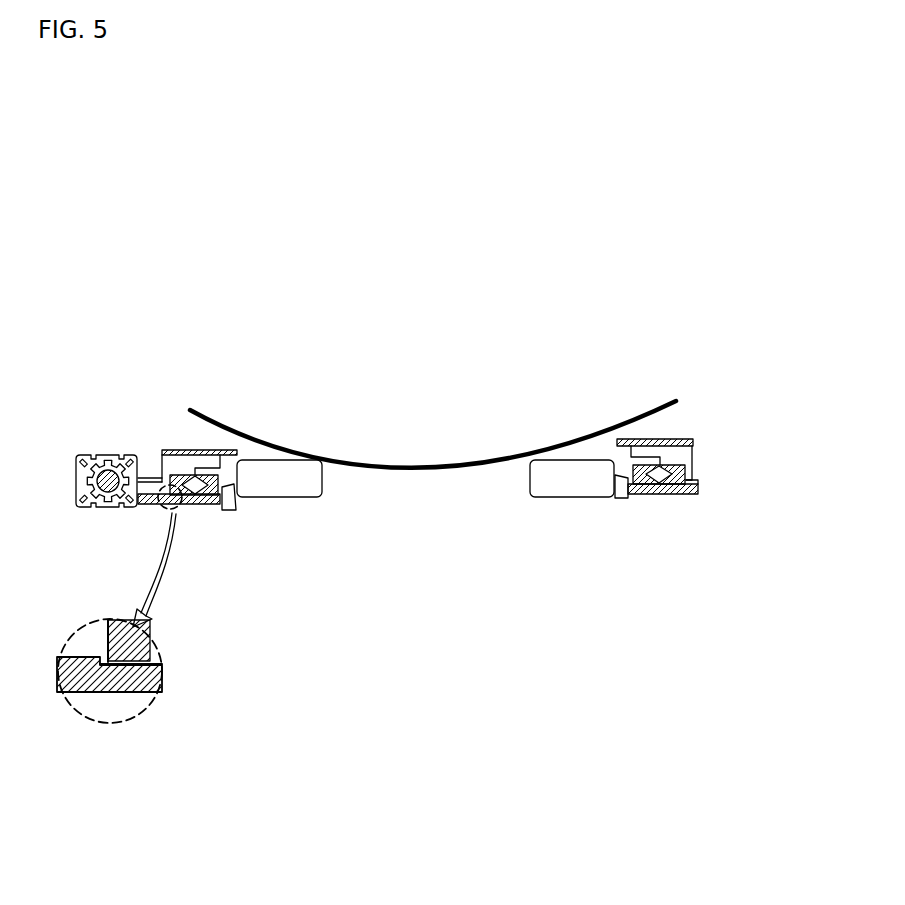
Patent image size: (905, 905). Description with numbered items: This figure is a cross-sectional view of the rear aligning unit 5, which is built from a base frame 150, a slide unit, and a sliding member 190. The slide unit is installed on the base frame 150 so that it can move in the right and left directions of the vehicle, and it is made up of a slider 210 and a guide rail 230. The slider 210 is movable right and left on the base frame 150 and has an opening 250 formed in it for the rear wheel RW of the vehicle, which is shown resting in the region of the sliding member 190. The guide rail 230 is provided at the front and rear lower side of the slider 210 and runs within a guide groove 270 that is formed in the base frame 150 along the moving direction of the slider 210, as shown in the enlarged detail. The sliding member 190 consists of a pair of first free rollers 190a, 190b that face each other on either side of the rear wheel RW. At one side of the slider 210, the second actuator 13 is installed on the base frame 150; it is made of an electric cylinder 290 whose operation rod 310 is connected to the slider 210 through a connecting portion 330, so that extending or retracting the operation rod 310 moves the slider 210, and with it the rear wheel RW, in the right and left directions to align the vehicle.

The rear aligning unit 5 is at (694, 353).
The second actuator 13 is at (72, 443).
The base frame 150 is at (222, 506).
The sliding member 190 is at (522, 286).
The first free roller 190a is at (280, 468).
The first free roller 190b is at (558, 470).
The slider 210 is at (173, 447).
The guide rail 230 is at (182, 510).
The opening 250 is at (603, 450).
The guide groove 270 is at (102, 693).
The electric cylinder 290 is at (77, 478).
The operation rod 310 is at (110, 470).
The connecting portion 330 is at (146, 470).
The rear wheel RW is at (425, 472).